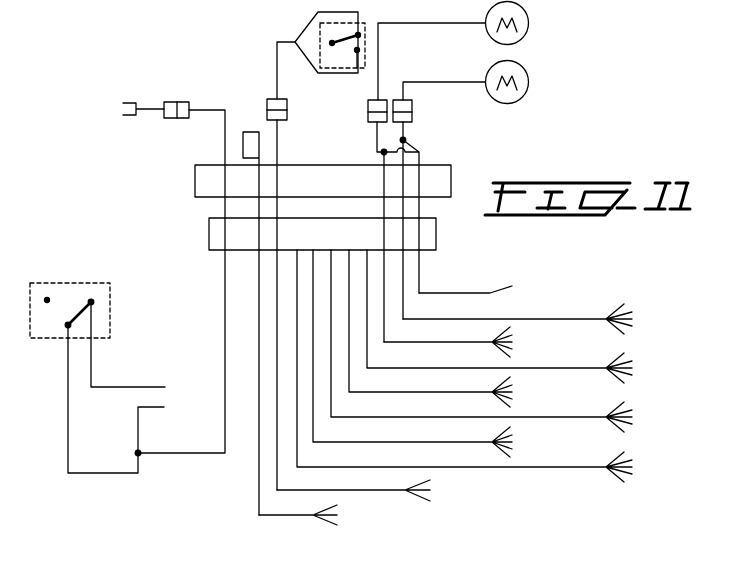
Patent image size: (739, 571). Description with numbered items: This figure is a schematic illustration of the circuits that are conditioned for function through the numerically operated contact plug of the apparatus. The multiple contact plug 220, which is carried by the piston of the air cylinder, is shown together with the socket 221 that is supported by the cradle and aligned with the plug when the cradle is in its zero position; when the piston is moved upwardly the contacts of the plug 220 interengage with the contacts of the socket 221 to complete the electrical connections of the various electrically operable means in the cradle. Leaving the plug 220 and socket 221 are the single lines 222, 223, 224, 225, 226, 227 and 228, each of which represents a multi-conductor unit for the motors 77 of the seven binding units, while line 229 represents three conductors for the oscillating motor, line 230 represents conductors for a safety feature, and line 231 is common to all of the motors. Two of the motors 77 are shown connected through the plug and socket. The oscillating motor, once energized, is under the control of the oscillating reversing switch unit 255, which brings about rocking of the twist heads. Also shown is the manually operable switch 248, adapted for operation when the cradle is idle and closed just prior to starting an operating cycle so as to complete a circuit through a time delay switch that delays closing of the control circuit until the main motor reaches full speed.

The motor 77 is at (503, 122).
The multiple contact plug 220 is at (436, 242).
The socket 221 is at (452, 185).
The line 222 is at (575, 318).
The line 223 is at (467, 342).
The line 224 is at (563, 368).
The line 225 is at (467, 392).
The line 226 is at (563, 417).
The line 227 is at (467, 442).
The line 228 is at (566, 467).
The line 229 is at (388, 488).
The line 230 is at (300, 515).
The line 231 is at (462, 293).
The manually operable switch 248 is at (78, 313).
The oscillating reversing switch unit 255 is at (365, 69).